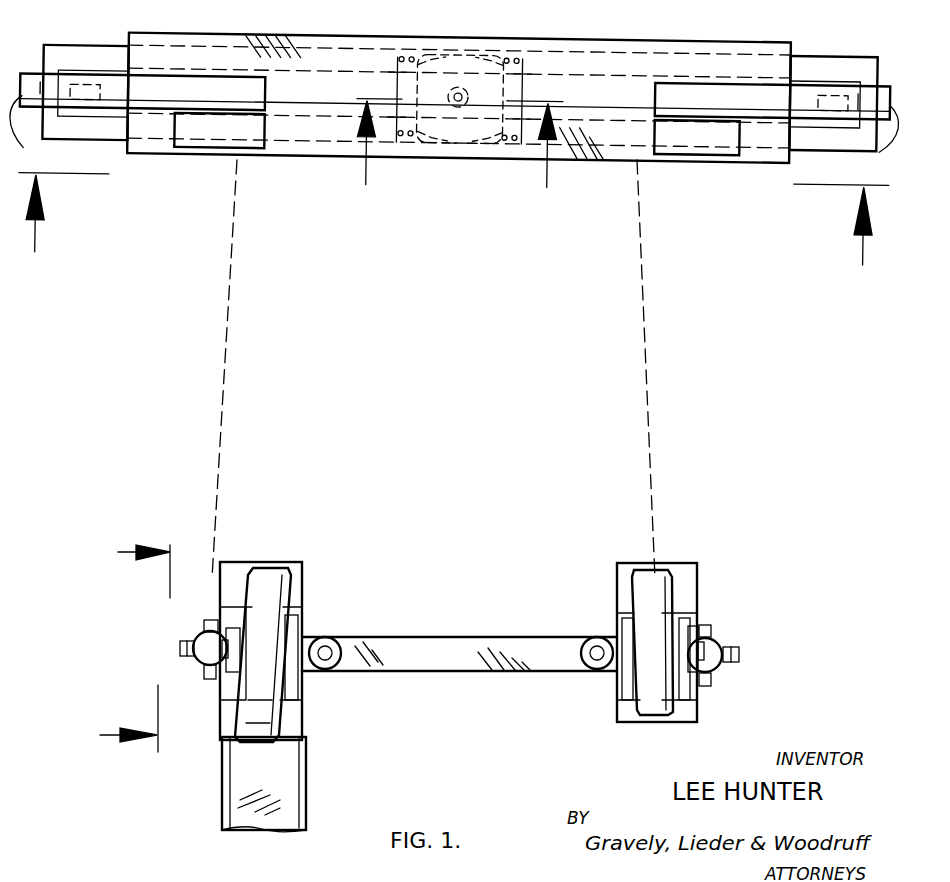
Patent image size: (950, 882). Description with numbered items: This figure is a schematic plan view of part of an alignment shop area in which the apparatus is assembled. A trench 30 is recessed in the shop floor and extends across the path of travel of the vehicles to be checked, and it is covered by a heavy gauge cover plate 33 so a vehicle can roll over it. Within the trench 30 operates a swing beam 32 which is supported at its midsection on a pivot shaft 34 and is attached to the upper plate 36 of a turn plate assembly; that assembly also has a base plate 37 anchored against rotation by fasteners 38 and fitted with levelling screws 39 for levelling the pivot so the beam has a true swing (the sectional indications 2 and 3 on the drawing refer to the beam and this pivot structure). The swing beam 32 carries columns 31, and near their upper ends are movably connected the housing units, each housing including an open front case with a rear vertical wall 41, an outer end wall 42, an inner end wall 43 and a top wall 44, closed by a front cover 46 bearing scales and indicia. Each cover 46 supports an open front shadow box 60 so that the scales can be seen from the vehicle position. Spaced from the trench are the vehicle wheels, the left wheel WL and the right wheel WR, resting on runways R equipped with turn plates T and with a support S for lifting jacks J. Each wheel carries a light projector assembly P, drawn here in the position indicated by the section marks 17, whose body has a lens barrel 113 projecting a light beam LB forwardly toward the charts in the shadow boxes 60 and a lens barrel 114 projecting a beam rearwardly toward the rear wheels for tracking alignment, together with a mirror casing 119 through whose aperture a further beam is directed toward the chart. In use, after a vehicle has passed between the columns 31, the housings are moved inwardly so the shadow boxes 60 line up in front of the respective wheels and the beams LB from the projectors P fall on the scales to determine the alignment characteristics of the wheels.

The trench 30 is at (63, 50).
The columns 31 is at (93, 77).
The swing beam 32 is at (82, 123).
The cover plate 33 is at (300, 158).
The pivot shaft 34 is at (458, 108).
The upper plate 36 is at (506, 92).
The base plate 37 is at (394, 84).
The fasteners 38 is at (398, 58).
The levelling screws 39 is at (503, 54).
The rear vertical wall 41 is at (173, 68).
The outer end wall 42 is at (454, 137).
The inner end wall 43 is at (268, 94).
The top wall 44 is at (162, 102).
The front cover 46 is at (117, 115).
The shadow box 60 is at (212, 141).
The section line FIG. 2 is at (453, 235).
The section line FIG. 3 is at (459, 157).
The section line FIG. 17 is at (119, 647).
The lens barrel 113 is at (211, 619).
The lens barrel 114 is at (207, 682).
The mirror casing 119 is at (180, 650).
The light beam LB is at (225, 345).
The left wheel WL is at (266, 577).
The right wheel WR is at (646, 576).
The runways R is at (300, 778).
The turn plates T is at (296, 684).
The support S is at (450, 672).
The lifting jacks J is at (331, 637).
The light projector assembly P is at (170, 636).